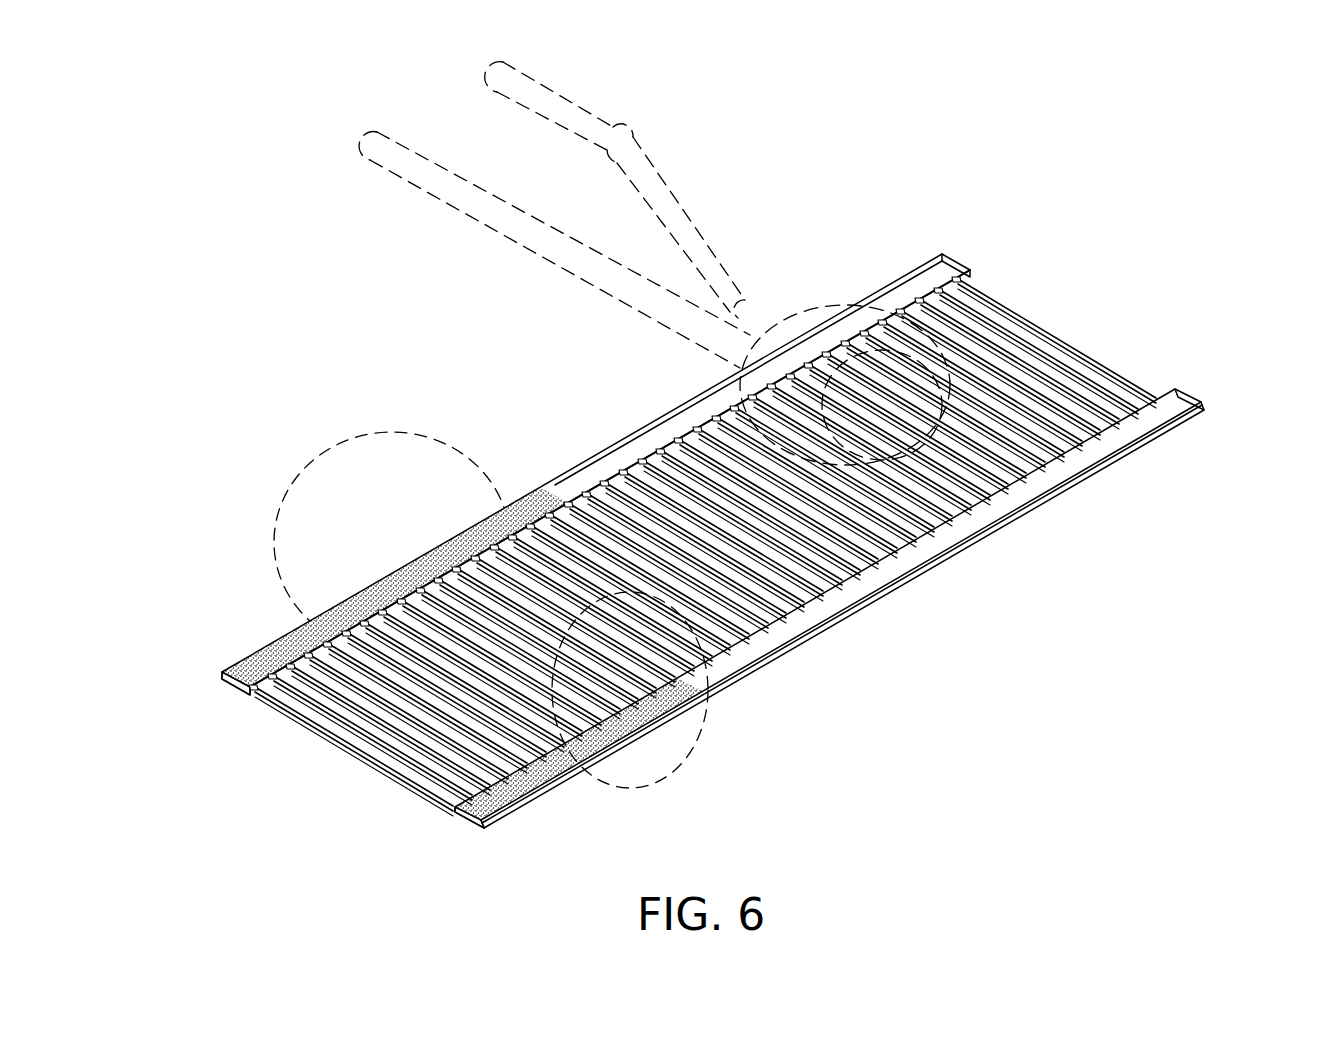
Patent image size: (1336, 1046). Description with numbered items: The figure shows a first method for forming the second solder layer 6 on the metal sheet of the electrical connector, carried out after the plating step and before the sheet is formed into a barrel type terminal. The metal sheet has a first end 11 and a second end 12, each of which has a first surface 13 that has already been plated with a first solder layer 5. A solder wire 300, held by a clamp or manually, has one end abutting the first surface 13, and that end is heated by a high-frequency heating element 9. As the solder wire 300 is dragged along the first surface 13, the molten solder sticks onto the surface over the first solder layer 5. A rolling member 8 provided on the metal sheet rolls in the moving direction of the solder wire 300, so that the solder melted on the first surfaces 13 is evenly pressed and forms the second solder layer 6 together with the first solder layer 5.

The first solder layer 5 is at (975, 257).
The second solder layer 6 is at (250, 652).
The rolling member 8 is at (307, 487).
The high-frequency heating element 9 is at (605, 298).
The first end 11 is at (220, 671).
The second end 12 is at (518, 815).
The first surface 13 is at (568, 785).
The solder wire 300 is at (932, 262).